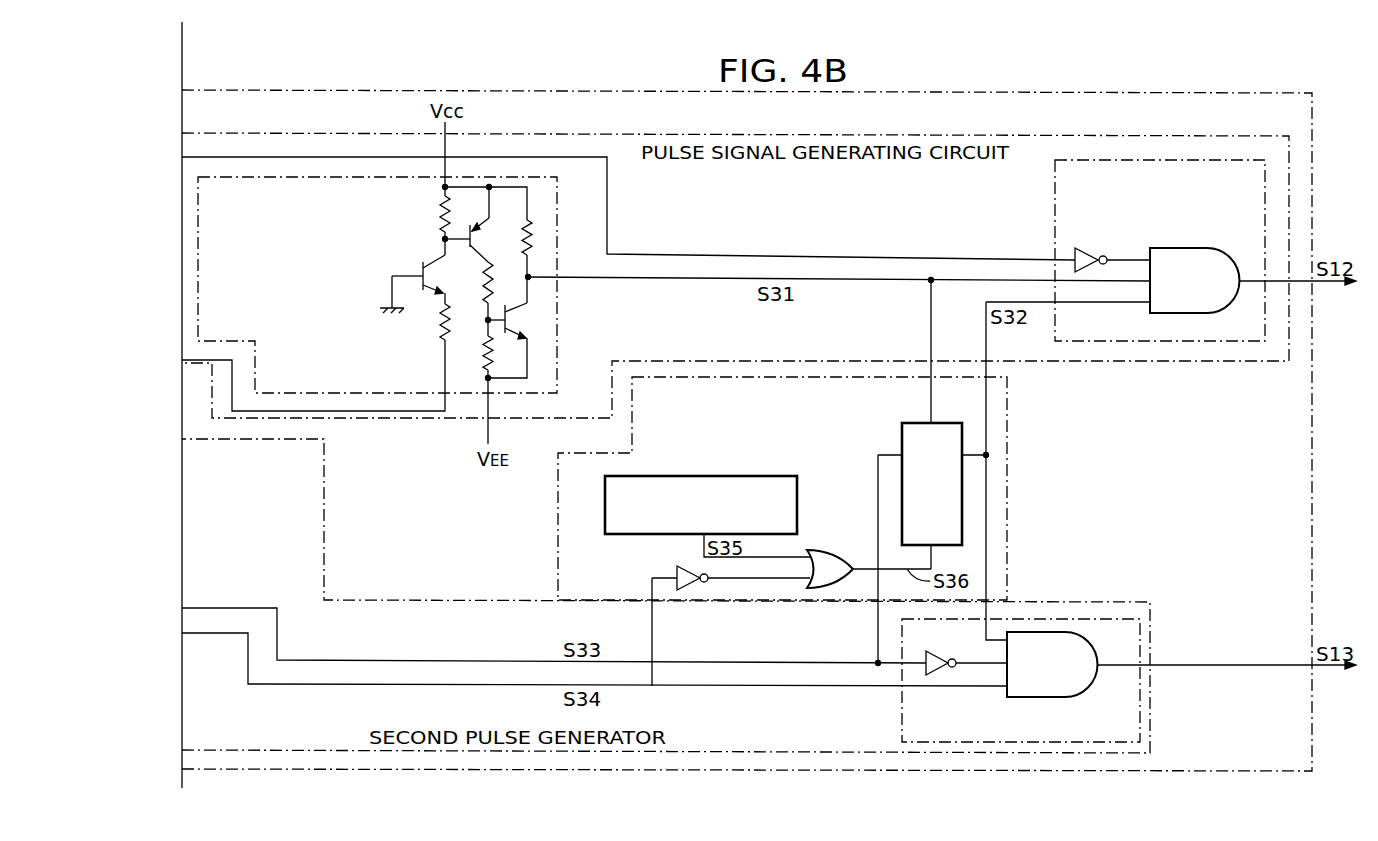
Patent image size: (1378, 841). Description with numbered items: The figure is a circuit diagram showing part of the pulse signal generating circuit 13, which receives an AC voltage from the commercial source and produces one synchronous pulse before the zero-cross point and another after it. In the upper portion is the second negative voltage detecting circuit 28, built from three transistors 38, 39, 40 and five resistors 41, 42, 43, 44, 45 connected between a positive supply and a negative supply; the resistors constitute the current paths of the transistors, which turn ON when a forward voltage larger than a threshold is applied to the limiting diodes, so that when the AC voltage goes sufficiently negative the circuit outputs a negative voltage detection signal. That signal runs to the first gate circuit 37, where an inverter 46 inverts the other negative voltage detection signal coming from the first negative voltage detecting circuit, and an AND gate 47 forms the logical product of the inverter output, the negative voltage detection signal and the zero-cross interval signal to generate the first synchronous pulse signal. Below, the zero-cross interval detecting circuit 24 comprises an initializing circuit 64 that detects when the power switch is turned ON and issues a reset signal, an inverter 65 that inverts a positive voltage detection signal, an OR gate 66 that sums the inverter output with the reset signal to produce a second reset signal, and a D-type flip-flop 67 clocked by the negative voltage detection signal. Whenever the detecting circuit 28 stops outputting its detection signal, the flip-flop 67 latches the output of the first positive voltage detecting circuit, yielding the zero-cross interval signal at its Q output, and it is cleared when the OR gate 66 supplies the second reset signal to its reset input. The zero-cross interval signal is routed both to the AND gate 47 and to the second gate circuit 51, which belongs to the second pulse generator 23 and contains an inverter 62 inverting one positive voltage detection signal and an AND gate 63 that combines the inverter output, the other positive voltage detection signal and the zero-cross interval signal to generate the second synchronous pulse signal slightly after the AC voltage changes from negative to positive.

The pulse signal generating circuit 13 is at (1312, 388).
The second pulse generator 23 is at (415, 600).
The zero-cross interval detecting circuit 24 is at (1010, 460).
The second negative voltage detecting circuit 28 is at (557, 290).
The first gate circuit 37 is at (1055, 192).
The transistor 38 is at (434, 262).
The transistor 39 is at (480, 233).
The transistor 40 is at (520, 308).
The resistor 41 is at (440, 205).
The resistor 42 is at (437, 323).
The resistor 43 is at (510, 278).
The resistor 44 is at (483, 358).
The resistor 45 is at (538, 244).
The inverter 46 is at (1090, 250).
The AND gate 47 is at (1234, 260).
The second gate circuit 51 is at (902, 695).
The inverter 62 is at (945, 645).
The AND gate 63 is at (1110, 648).
The initializing circuit 64 is at (605, 520).
The inverter 65 is at (678, 567).
The OR gate 66 is at (845, 549).
The D-type flip-flop 67 is at (950, 423).